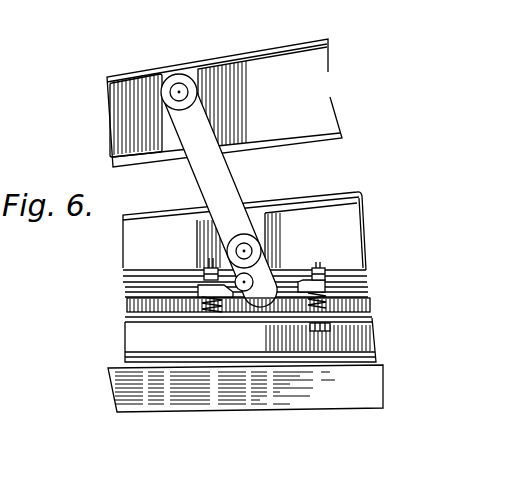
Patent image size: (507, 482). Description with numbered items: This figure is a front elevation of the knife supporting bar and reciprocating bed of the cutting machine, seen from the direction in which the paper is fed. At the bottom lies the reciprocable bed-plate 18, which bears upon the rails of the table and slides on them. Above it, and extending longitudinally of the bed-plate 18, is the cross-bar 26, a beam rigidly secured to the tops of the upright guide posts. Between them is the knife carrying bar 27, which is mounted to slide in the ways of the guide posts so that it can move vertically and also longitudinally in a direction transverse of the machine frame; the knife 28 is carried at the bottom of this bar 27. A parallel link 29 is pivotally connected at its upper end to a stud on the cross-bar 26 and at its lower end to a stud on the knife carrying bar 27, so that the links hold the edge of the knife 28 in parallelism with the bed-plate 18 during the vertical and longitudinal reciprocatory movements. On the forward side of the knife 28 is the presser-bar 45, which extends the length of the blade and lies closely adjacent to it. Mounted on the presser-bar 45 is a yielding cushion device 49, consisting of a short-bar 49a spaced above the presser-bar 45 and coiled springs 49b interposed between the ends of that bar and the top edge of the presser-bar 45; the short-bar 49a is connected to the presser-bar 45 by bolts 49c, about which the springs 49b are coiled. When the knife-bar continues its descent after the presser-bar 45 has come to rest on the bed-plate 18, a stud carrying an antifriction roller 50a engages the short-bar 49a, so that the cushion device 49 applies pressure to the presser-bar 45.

The cross-bar 26 is at (245, 60).
The knife carrying bar 27 is at (326, 186).
The parallel links 29 is at (212, 163).
The knife 28 is at (127, 310).
The presser-bar 45 is at (127, 342).
The bed-plate 18 is at (113, 381).
The yielding cushion devices 49 is at (268, 296).
The short-bar 49a is at (265, 302).
The coiled springs 49b is at (200, 292).
The bolts 49c is at (208, 262).
The antifriction roller 50a is at (213, 306).